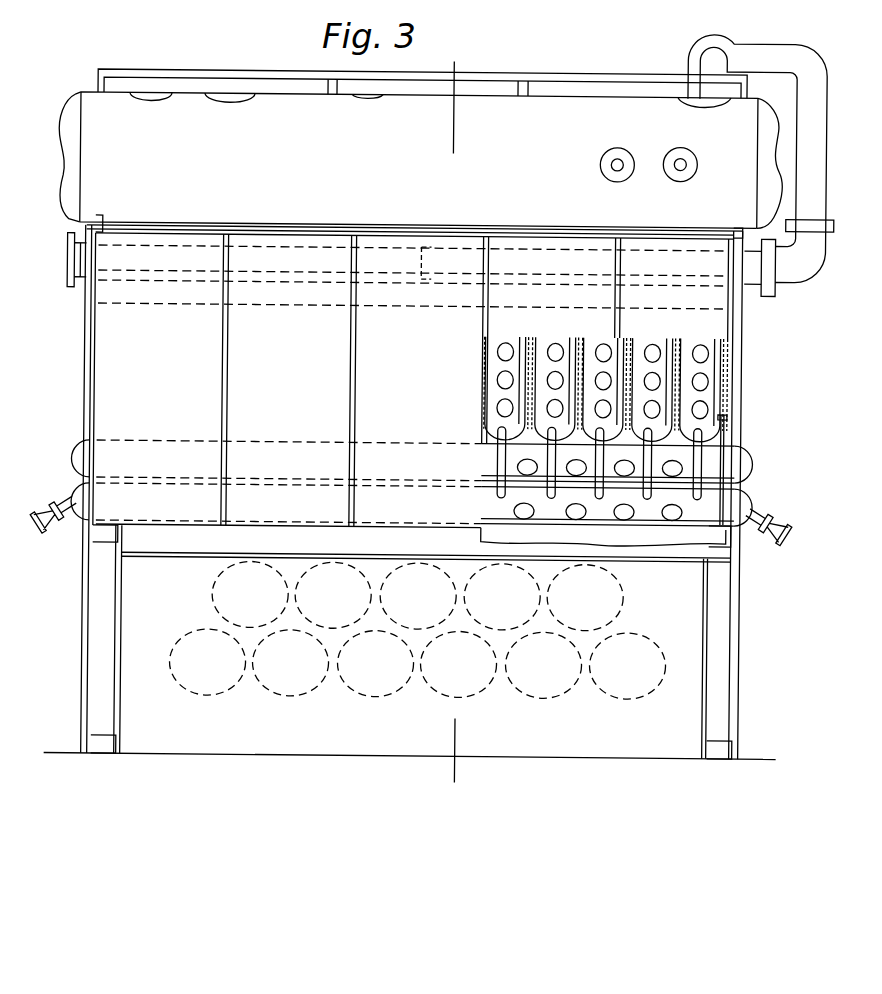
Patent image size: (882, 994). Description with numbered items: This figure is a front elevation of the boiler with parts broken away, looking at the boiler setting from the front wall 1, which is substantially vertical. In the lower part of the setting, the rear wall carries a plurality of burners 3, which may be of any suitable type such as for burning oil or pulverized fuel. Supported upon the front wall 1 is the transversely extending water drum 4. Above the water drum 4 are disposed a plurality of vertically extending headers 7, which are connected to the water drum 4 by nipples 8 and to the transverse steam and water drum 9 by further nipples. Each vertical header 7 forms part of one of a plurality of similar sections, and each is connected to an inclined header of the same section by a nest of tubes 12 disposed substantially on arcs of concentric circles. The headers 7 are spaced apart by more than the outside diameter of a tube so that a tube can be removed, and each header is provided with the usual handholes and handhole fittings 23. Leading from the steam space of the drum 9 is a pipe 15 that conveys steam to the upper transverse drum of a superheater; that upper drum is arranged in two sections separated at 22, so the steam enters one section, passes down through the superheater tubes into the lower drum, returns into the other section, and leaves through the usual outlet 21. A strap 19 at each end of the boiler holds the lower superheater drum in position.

The front wall 1 is at (476, 783).
The burners 3 is at (617, 595).
The water drum 4 is at (739, 495).
The vertical headers 7 is at (710, 390).
The nipples 8 is at (704, 460).
The steam and water drum 9 is at (104, 147).
The nest of tubes 12 is at (682, 346).
The pipe 15 is at (819, 186).
The strap 19 is at (727, 431).
The outlet 21 is at (84, 256).
The separation of upper drum sections 22 is at (449, 241).
The handholes and handhole fittings 23 is at (707, 375).